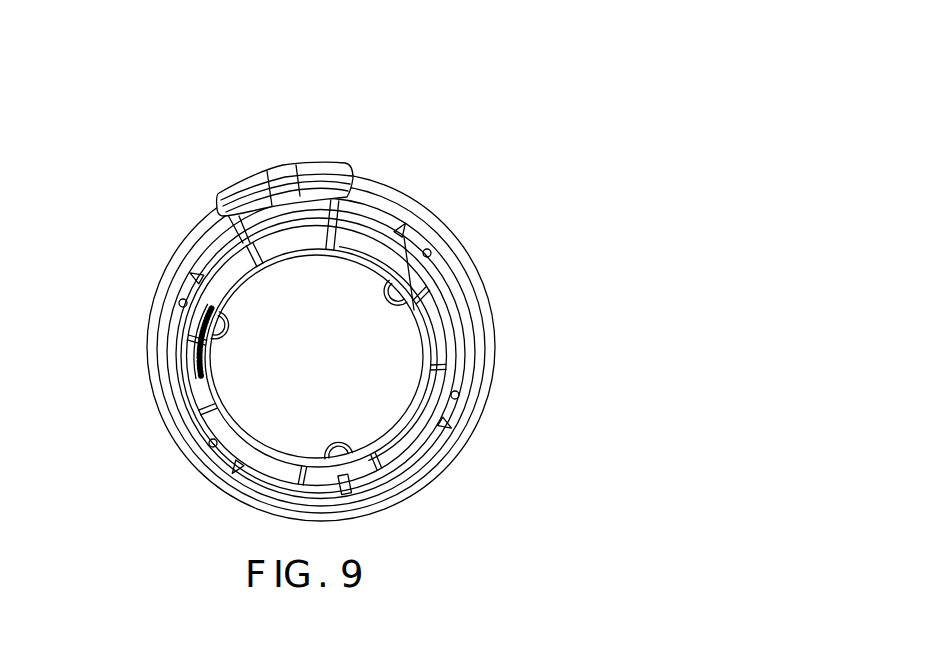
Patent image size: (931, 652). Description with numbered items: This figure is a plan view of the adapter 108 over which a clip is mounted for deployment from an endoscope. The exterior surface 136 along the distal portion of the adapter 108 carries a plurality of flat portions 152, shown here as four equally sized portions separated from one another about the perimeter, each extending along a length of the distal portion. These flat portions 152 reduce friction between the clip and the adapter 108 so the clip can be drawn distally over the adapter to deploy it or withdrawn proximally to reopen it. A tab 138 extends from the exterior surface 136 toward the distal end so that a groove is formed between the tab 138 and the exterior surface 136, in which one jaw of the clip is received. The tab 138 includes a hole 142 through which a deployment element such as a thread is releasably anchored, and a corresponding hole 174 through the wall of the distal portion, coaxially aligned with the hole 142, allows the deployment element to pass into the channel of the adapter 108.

The adapter 108 is at (173, 170).
The exterior surface 136 is at (192, 289).
The tab 138 is at (318, 170).
The hole 142 is at (283, 179).
The flat portions 152 is at (206, 371).
The corresponding hole 174 is at (293, 242).